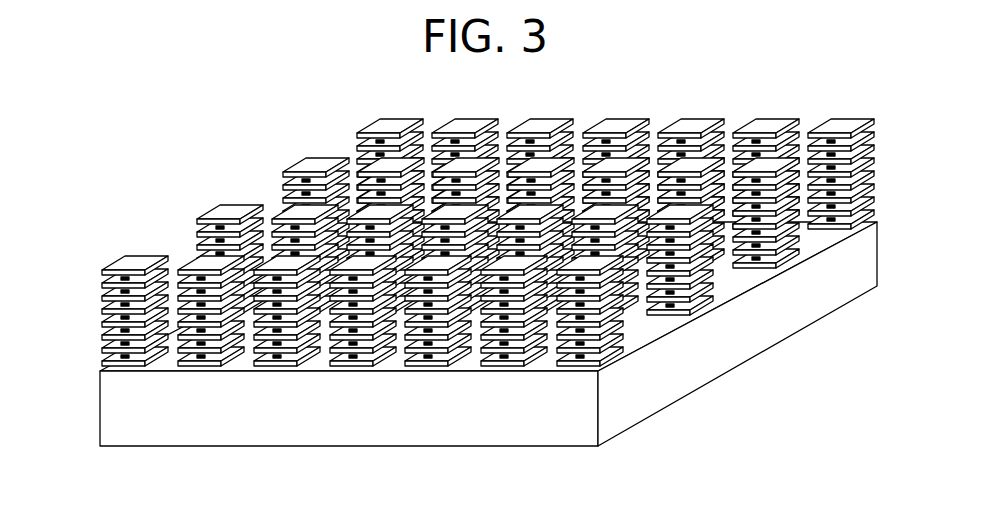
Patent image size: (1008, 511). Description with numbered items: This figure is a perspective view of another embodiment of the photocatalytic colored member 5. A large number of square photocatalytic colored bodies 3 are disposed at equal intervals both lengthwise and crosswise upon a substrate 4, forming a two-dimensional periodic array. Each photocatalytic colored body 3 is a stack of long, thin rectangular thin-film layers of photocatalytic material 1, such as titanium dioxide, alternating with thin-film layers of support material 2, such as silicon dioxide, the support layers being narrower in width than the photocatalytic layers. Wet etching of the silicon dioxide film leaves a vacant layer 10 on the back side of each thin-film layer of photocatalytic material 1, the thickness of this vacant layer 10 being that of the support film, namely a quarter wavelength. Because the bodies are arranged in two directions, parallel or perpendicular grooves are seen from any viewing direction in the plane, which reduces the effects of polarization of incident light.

The thin-film layer of photocatalytic material 1 is at (110, 275).
The thin-film layer of support material 2 is at (117, 279).
The photocatalytic colored body 3 is at (232, 195).
The substrate 4 is at (523, 428).
The photocatalytic colored member 5 is at (455, 224).
The vacant layer 10 is at (110, 314).